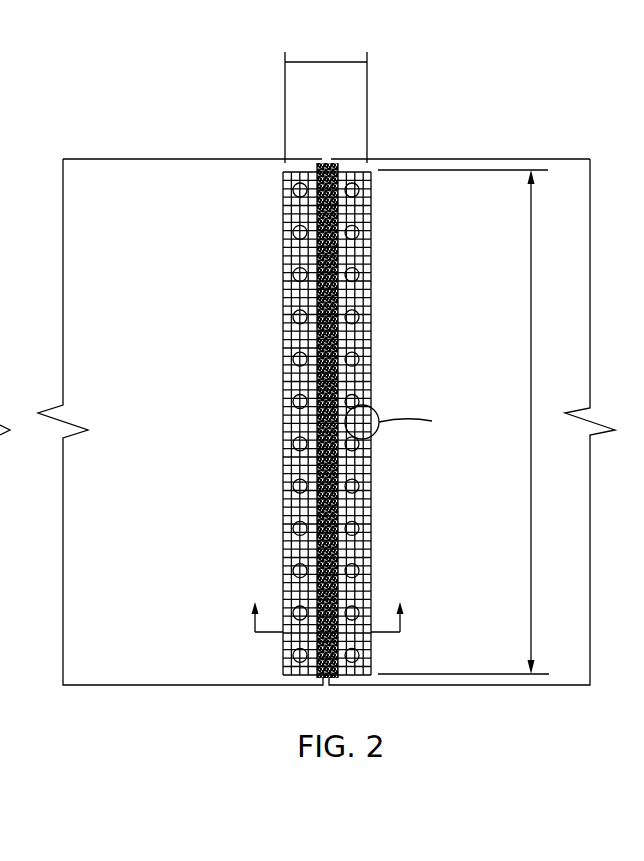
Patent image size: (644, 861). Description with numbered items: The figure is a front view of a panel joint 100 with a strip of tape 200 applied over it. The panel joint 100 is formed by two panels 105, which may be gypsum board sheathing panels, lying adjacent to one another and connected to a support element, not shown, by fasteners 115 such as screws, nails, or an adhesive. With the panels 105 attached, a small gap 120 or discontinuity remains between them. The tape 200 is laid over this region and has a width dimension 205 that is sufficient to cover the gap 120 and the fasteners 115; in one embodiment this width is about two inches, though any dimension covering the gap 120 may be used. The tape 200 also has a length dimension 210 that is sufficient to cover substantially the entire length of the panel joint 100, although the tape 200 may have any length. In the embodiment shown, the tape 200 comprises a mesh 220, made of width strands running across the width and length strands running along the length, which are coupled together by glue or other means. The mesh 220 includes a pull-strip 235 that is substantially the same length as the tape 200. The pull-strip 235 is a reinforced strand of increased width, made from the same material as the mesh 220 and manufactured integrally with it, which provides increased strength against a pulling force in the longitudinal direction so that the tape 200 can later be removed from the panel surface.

The panel joint 100 is at (307, 353).
The panels 105 is at (200, 320).
The fasteners 115 is at (360, 270).
The gap 120 is at (328, 150).
The tape 200 is at (363, 552).
The width dimension 205 is at (353, 61).
The length dimension 210 is at (531, 208).
The mesh 220 is at (283, 377).
The pull-strip 235 is at (290, 196).